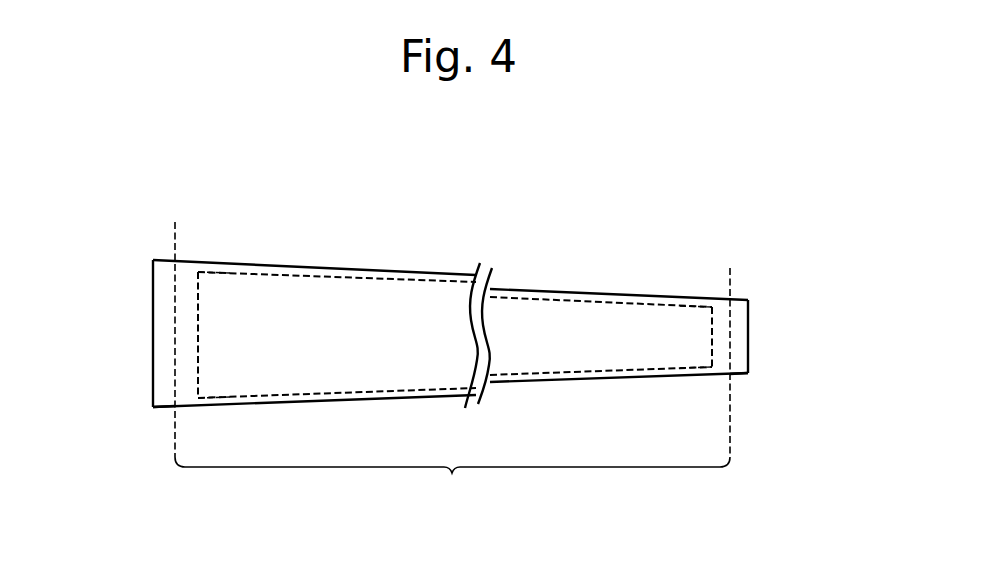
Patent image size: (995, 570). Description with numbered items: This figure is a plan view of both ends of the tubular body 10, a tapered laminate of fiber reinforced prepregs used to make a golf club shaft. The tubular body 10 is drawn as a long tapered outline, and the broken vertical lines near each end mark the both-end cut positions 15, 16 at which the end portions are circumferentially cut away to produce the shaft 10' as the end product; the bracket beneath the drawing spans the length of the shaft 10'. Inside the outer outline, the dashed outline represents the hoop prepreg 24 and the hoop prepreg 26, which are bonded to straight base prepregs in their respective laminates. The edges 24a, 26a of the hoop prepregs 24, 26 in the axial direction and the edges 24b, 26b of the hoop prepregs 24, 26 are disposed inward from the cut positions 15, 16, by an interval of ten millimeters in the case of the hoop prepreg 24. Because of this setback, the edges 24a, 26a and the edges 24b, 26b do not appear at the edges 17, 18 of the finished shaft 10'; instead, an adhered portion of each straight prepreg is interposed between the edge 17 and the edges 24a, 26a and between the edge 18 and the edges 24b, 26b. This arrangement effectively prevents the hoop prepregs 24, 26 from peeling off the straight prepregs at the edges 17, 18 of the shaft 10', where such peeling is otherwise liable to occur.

The tubular body 10 is at (450, 292).
The shaft 10' is at (452, 483).
The both-end cut position 15 is at (731, 300).
The both-end cut position 16 is at (176, 262).
The edge of the shaft 17 is at (731, 373).
The edge of the shaft 18 is at (172, 407).
The hoop prepreg 24 is at (584, 298).
The edge of the hoop prepreg 24a is at (718, 306).
The edge of the hoop prepreg 24b is at (197, 296).
The hoop prepreg 26 is at (584, 360).
The edge of the hoop prepreg 26a is at (716, 363).
The edge of the hoop prepreg 26b is at (196, 373).